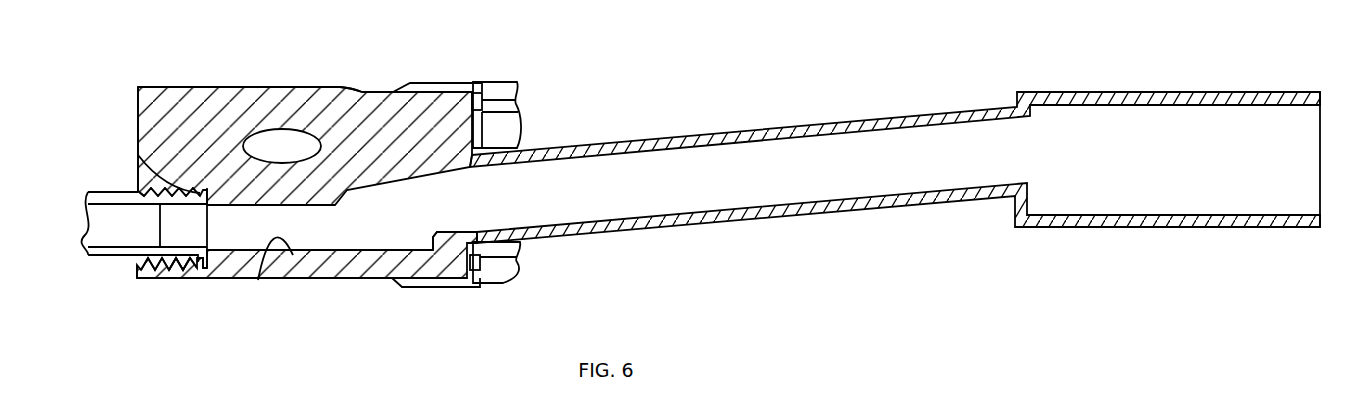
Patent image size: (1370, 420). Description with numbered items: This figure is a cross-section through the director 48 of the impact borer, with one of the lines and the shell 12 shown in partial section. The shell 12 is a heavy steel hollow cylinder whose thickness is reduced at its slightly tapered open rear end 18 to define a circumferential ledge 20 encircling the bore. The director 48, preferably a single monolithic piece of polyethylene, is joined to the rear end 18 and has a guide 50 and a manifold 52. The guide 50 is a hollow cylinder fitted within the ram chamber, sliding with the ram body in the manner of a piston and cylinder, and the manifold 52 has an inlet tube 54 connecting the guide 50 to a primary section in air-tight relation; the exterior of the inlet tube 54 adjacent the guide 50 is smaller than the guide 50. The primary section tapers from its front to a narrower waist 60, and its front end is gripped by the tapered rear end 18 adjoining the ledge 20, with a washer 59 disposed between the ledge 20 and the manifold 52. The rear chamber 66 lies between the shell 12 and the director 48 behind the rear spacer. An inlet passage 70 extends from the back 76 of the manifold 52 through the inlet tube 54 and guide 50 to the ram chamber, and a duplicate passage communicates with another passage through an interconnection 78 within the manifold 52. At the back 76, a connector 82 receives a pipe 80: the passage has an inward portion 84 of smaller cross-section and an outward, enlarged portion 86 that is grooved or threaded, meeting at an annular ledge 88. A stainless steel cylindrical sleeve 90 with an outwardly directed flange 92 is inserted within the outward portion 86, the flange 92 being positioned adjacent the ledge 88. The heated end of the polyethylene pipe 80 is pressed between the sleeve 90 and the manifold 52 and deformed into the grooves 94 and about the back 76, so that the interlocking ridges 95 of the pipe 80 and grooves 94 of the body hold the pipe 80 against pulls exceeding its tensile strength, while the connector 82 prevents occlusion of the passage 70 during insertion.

The shell 12 is at (518, 83).
The rear end 18 is at (462, 83).
The circumferential ledge 20 is at (483, 91).
The director 48 is at (713, 78).
The guide 50 is at (1182, 91).
The manifold 52 is at (194, 87).
The inlet tube 54 is at (622, 142).
The washer 59 is at (521, 109).
The waist 60 is at (377, 91).
The rear chamber 66 is at (496, 137).
The inlet passage 70 is at (1290, 155).
The back 76 is at (138, 122).
The interconnection 78 is at (291, 137).
The pipe 80 is at (88, 193).
The connector 82 is at (186, 274).
The inward portion 84 is at (261, 284).
The outward portion 86 is at (165, 272).
The annular ledge 88 is at (205, 188).
The cylindrical sleeve 90 is at (209, 246).
The flange 92 is at (196, 277).
The grooves 94 is at (157, 188).
The interlocking ridges 95 is at (143, 162).